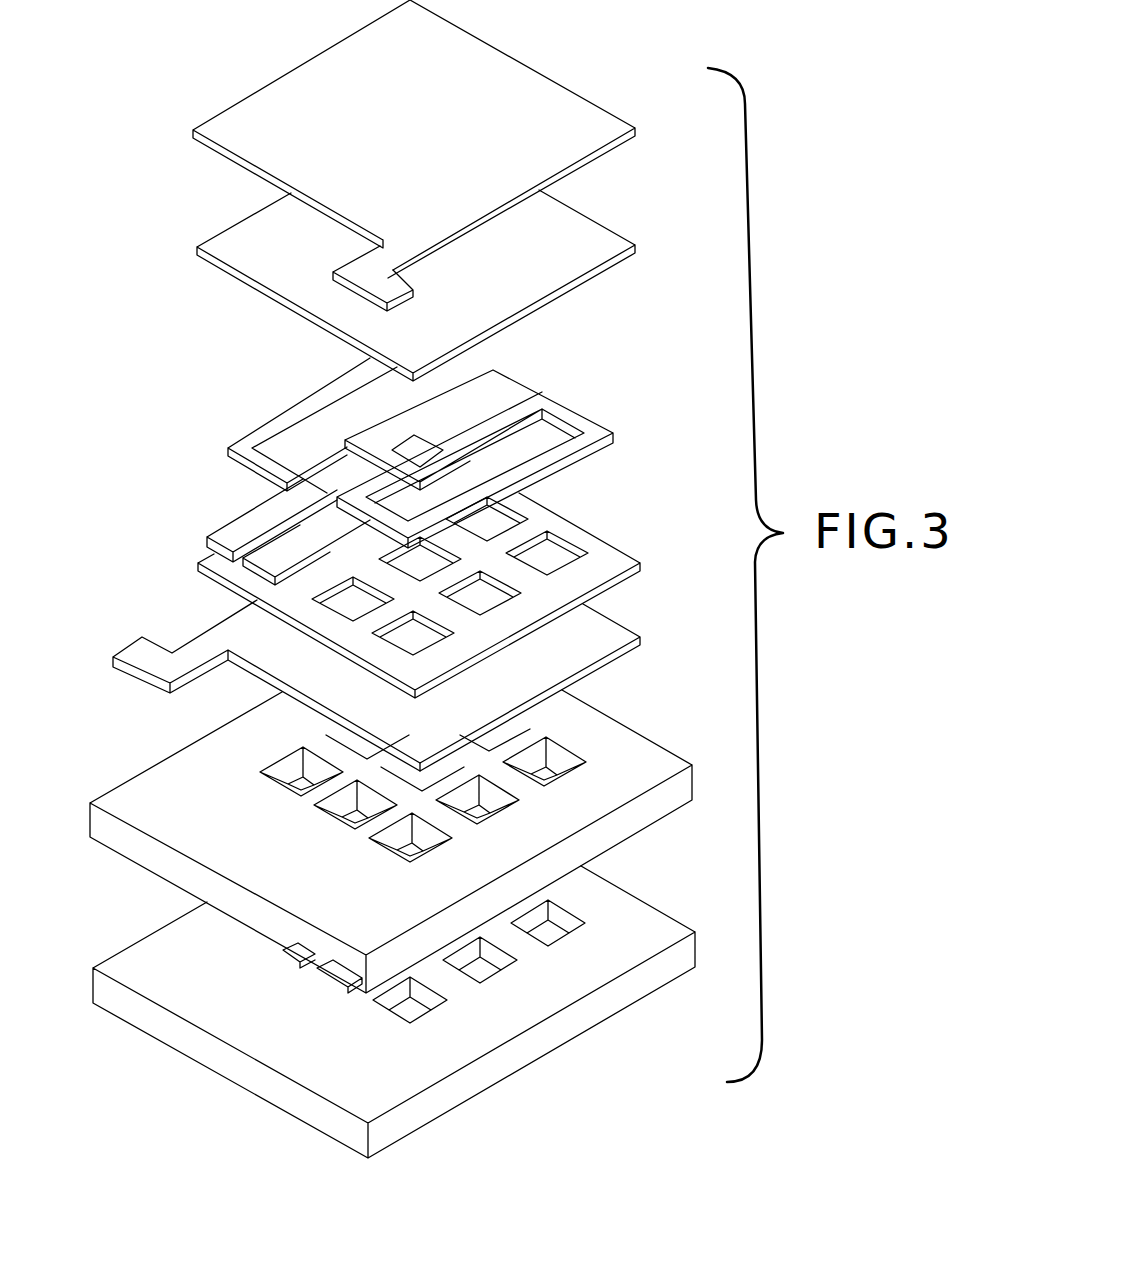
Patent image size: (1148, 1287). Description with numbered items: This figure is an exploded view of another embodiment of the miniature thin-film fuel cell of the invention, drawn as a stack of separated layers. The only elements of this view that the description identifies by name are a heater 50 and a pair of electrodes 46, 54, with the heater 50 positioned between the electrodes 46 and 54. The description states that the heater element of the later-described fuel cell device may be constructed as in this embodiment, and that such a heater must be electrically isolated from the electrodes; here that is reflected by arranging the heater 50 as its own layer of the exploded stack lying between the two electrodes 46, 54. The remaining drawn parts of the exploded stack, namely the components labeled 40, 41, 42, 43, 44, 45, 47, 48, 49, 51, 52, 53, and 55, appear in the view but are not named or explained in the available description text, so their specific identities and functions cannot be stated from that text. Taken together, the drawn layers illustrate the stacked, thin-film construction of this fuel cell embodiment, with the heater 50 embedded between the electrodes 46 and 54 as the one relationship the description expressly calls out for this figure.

The multilayer module 40 is at (588, 1070).
The upper layer stack 41 is at (143, 175).
The lower layer stack 42 is at (132, 907).
The cavities 43 is at (530, 757).
The upper ceramic block layer 44 is at (652, 756).
The lower ceramic block layer 45 is at (652, 920).
The electrode 46 is at (572, 666).
The conductor strip 47 is at (135, 655).
The dielectric layer with pads 48 is at (618, 560).
The conductive pads 49 is at (557, 553).
The heater 50 is at (572, 415).
The loop conductor 51 is at (247, 530).
The connection strip 52 is at (270, 555).
The dielectric layer 53 is at (568, 261).
The electrode 54 is at (507, 123).
The tab 55 is at (360, 278).